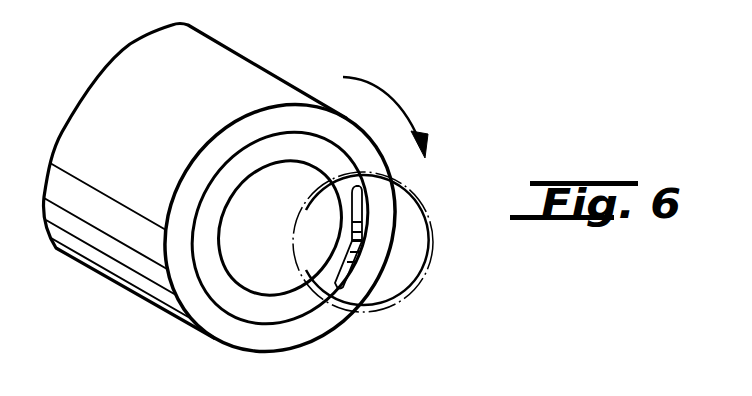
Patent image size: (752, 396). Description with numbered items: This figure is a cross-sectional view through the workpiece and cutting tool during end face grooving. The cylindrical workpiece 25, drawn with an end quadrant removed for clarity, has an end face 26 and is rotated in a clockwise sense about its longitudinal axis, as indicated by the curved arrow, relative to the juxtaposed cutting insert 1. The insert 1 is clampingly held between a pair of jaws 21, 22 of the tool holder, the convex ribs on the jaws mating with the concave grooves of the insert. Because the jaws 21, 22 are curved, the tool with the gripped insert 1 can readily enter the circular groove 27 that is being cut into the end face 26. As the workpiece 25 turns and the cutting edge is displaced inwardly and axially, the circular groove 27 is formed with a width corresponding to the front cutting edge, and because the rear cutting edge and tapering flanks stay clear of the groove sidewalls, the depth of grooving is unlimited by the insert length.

The insert 1 is at (358, 240).
The jaw 21 is at (365, 215).
The jaw 22 is at (352, 266).
The cylindrical workpiece 25 is at (218, 42).
The end face 26 is at (323, 327).
The circular groove 27 is at (277, 153).